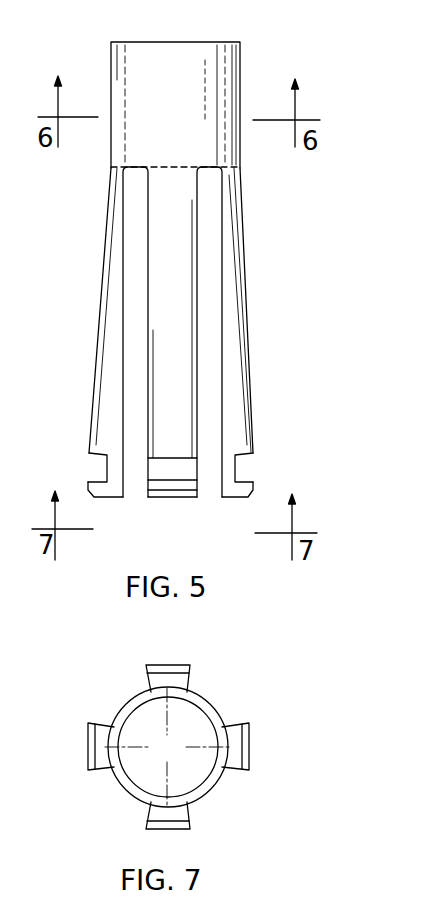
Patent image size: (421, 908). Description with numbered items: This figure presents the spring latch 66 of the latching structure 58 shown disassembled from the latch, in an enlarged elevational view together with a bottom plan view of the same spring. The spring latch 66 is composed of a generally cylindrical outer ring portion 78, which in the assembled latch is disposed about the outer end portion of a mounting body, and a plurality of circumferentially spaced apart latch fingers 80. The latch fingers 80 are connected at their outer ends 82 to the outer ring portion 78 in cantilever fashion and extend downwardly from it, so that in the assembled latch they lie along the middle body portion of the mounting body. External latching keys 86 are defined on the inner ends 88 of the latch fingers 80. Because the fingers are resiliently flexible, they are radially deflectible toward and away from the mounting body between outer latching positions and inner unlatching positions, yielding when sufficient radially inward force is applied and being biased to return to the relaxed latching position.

In FIG. 5, the latching structure 58 is at (261, 64).
In FIG. 5, the spring latch 66 is at (252, 277).
In FIG. 7, the spring latch 66 is at (226, 796).
In FIG. 5, the outer ring portion 78 is at (190, 135).
In FIG. 7, the outer ring portion 78 is at (217, 707).
In FIG. 5, the latch fingers 80 is at (112, 330).
In FIG. 7, the latch fingers 80 is at (167, 747).
In FIG. 5, the outer ends 82 is at (175, 173).
In FIG. 5, the external latching keys 86 is at (100, 475).
In FIG. 7, the external latching keys 86 is at (167, 663).
In FIG. 5, the inner ends 88 is at (158, 497).